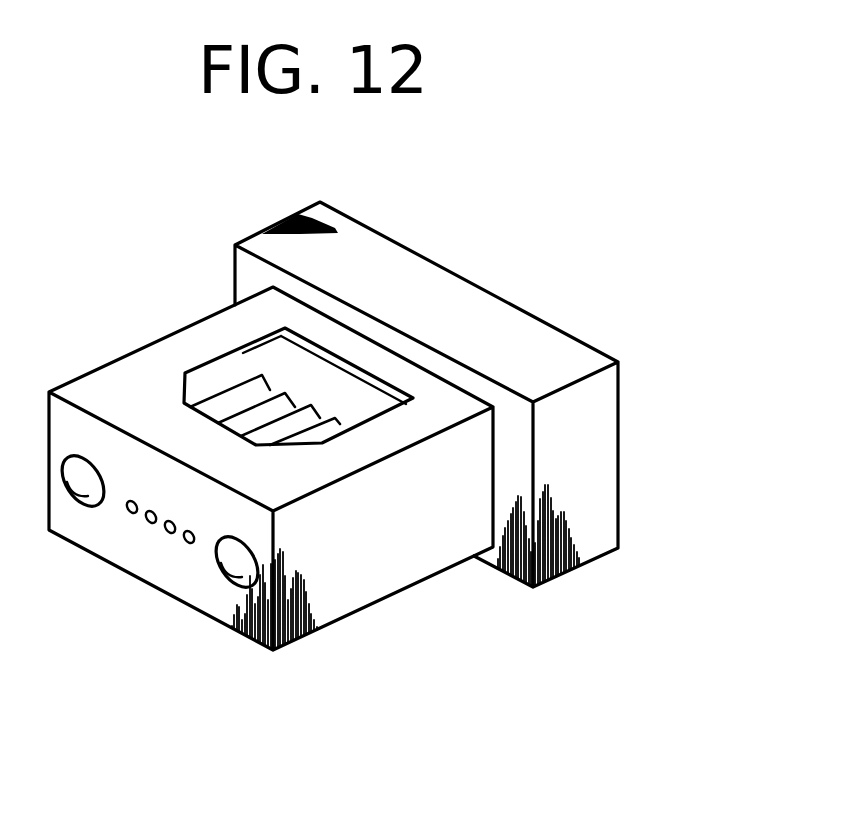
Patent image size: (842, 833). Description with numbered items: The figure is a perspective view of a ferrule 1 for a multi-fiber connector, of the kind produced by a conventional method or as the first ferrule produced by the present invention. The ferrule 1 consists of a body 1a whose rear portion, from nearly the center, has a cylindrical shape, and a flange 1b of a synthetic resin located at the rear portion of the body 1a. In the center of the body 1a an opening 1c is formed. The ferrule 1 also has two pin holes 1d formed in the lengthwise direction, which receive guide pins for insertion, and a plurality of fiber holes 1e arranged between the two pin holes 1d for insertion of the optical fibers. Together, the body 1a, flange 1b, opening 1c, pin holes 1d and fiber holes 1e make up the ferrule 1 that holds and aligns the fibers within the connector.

The ferrule 1 is at (371, 425).
The body 1a is at (385, 557).
The flange 1b is at (592, 460).
The opening 1c is at (258, 358).
The pin holes 1d is at (82, 502).
The fiber holes 1e is at (185, 542).